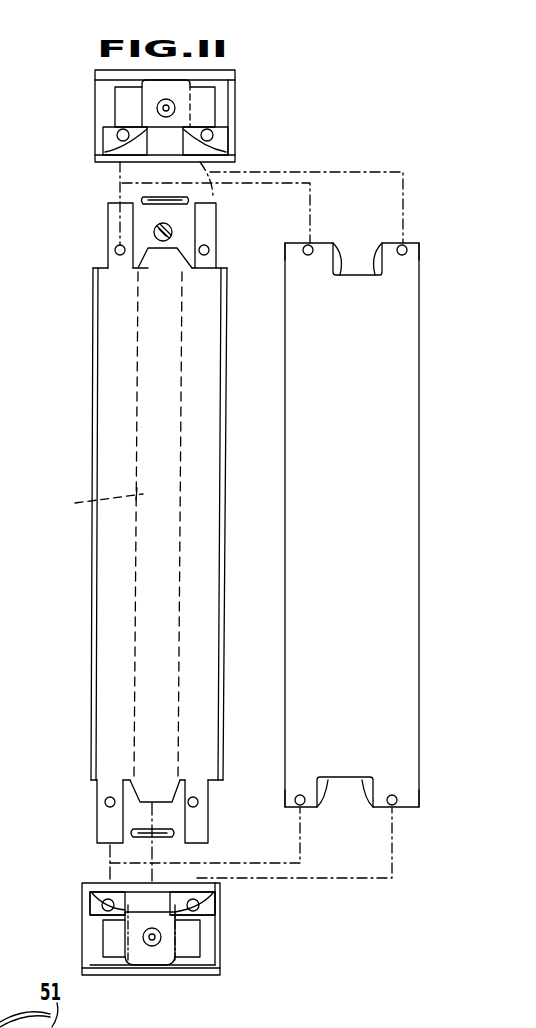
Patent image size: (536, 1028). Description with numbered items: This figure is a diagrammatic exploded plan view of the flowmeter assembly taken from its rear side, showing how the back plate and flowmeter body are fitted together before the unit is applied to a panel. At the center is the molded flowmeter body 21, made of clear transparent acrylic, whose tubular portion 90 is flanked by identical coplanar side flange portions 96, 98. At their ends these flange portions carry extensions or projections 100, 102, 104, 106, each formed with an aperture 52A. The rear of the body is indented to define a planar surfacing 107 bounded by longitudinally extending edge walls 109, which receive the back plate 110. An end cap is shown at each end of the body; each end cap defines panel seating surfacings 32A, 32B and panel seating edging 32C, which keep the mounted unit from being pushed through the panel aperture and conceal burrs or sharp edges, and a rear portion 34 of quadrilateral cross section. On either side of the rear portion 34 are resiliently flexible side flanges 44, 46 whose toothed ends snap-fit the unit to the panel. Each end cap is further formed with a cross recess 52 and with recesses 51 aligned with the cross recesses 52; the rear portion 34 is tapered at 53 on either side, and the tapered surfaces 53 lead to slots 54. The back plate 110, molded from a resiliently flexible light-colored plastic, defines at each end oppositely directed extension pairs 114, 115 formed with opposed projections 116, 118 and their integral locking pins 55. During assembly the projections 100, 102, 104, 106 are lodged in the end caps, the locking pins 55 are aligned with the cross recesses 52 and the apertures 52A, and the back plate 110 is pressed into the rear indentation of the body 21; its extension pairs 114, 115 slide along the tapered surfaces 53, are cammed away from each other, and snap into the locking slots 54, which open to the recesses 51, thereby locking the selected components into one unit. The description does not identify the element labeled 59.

The flowmeter body 21 is at (78, 563).
The panel seating surfacing 32A is at (222, 106).
The panel seating surfacing 32B is at (100, 92).
The panel seating edging 32C is at (200, 100).
The rear portion 34 is at (183, 78).
The side flange 44 is at (218, 108).
The side flange 46 is at (125, 100).
The recess 51 is at (95, 893).
The cross recess 52 is at (112, 133).
The aperture 52A is at (122, 256).
The tapered surface 53 is at (120, 150).
The locking slot 54 is at (118, 167).
The locking pin 55 is at (110, 140).
The base plate 59 is at (218, 956).
The tubular portion 90 is at (95, 503).
The side flange portion 96 is at (193, 437).
The side flange portion 98 is at (110, 421).
The extension or projection 100 is at (122, 242).
The extension or projection 102 is at (205, 232).
The extension or projection 104 is at (118, 825).
The extension or projection 106 is at (190, 827).
The planar surfacing 107 is at (120, 363).
The edge wall 109 is at (91, 472).
The back plate 110 is at (362, 523).
The extension pair 114 is at (410, 243).
The extension pair 115 is at (407, 800).
The projection 116 is at (338, 265).
The projection 118 is at (327, 790).